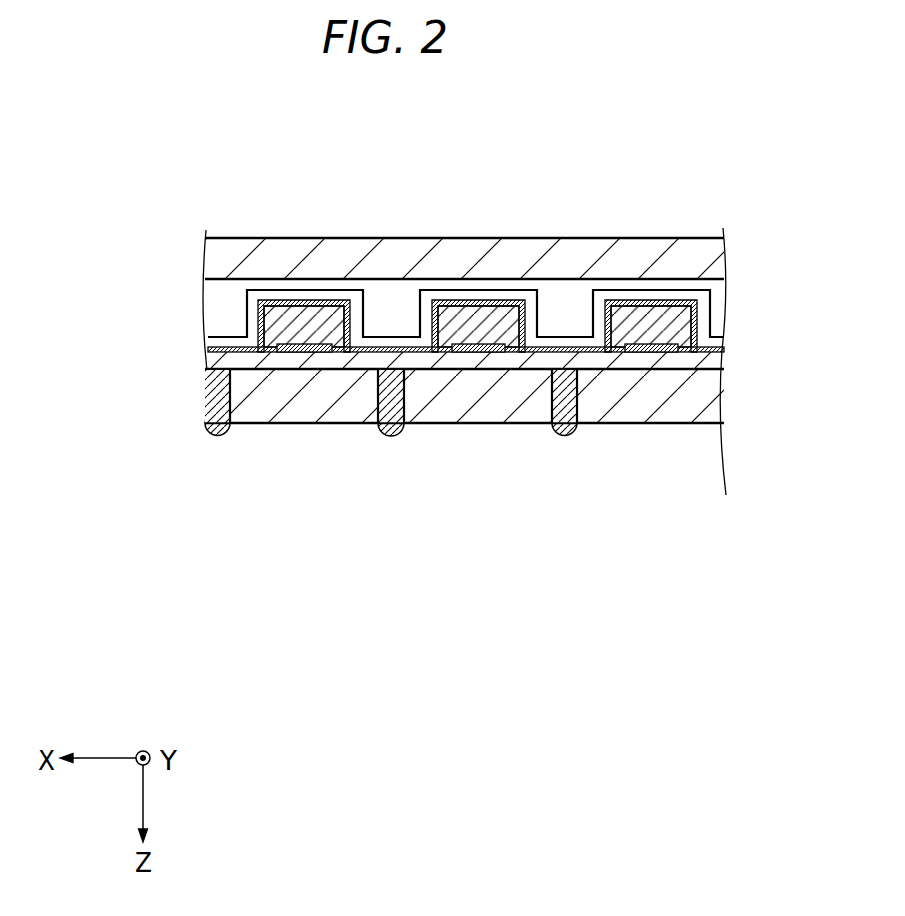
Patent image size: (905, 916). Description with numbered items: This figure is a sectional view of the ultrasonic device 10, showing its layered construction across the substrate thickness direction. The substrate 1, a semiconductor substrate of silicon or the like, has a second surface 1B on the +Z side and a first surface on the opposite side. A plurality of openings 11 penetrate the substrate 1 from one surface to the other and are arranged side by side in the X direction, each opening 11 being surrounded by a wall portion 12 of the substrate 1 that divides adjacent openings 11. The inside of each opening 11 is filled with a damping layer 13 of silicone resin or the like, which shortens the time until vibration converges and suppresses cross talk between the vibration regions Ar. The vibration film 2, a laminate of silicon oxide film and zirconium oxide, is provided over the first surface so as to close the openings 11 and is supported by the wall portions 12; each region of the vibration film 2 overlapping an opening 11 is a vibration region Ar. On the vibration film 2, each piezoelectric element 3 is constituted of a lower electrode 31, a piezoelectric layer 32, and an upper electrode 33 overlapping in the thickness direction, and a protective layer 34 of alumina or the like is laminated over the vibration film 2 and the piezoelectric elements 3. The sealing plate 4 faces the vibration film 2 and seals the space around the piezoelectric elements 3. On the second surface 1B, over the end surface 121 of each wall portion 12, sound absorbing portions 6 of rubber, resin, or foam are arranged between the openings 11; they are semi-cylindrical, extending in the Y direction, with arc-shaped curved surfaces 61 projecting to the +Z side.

The ultrasonic device 10 is at (133, 123).
The substrate 1 is at (207, 402).
The second surface 1B is at (212, 440).
The opening 11 is at (233, 393).
The wall portion 12 is at (215, 413).
The end surface 121 is at (392, 437).
The damping layer 13 is at (298, 403).
The vibration film 2 is at (212, 361).
The piezoelectric element 3 is at (367, 162).
The lower electrode 31 is at (302, 343).
The piezoelectric layer 32 is at (333, 320).
The upper electrode 33 is at (277, 297).
The protective layer 34 is at (685, 298).
The sealing plate 4 is at (457, 257).
The sound absorbing portion 6 is at (224, 440).
The curved surface 61 is at (403, 432).
The vibration region Ar is at (252, 363).